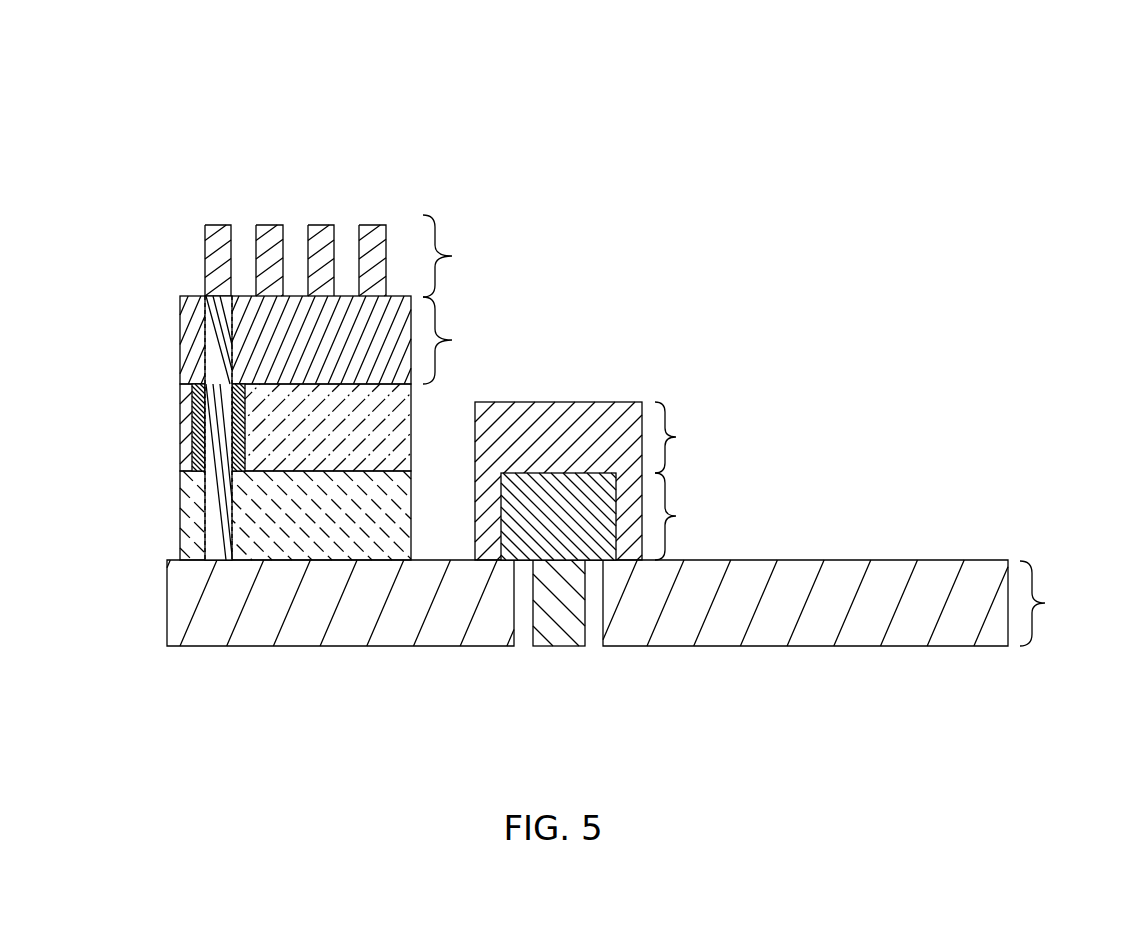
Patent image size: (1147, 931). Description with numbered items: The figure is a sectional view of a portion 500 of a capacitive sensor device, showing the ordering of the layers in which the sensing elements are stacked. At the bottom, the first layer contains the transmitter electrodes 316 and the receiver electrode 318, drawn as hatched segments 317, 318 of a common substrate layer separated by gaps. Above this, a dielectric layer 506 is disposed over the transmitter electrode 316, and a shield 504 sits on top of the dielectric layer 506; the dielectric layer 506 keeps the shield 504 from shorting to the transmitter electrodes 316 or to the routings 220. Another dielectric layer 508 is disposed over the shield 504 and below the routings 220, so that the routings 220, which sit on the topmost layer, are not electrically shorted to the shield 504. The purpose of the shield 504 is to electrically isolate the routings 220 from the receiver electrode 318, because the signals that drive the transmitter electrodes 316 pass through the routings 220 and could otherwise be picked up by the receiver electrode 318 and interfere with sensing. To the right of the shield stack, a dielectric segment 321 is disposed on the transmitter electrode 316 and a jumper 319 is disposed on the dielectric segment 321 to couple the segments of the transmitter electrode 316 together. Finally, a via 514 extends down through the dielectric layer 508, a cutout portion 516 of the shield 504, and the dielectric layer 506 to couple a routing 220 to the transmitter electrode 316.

The portion 500 is at (141, 73).
The routings 220 is at (212, 225).
The shield 504 is at (277, 439).
The dielectric layer 506 is at (277, 527).
The dielectric layer 508 is at (317, 352).
The via 514 is at (205, 340).
The cutout portion 516 is at (192, 440).
The transmitter electrodes 316 is at (413, 661).
The substrate portions 317 is at (321, 614).
The receiver electrode 318 is at (540, 614).
The jumper 319 is at (539, 449).
The dielectric segment 321 is at (539, 527).